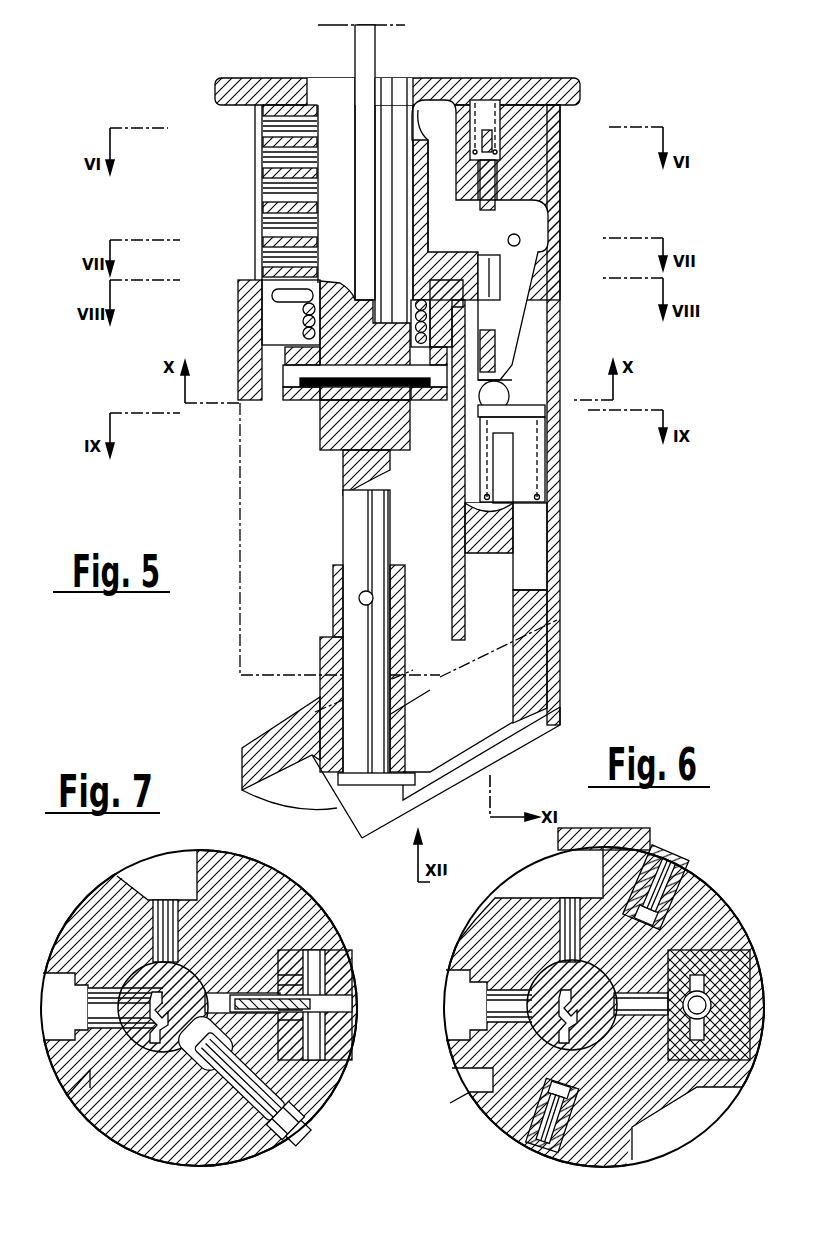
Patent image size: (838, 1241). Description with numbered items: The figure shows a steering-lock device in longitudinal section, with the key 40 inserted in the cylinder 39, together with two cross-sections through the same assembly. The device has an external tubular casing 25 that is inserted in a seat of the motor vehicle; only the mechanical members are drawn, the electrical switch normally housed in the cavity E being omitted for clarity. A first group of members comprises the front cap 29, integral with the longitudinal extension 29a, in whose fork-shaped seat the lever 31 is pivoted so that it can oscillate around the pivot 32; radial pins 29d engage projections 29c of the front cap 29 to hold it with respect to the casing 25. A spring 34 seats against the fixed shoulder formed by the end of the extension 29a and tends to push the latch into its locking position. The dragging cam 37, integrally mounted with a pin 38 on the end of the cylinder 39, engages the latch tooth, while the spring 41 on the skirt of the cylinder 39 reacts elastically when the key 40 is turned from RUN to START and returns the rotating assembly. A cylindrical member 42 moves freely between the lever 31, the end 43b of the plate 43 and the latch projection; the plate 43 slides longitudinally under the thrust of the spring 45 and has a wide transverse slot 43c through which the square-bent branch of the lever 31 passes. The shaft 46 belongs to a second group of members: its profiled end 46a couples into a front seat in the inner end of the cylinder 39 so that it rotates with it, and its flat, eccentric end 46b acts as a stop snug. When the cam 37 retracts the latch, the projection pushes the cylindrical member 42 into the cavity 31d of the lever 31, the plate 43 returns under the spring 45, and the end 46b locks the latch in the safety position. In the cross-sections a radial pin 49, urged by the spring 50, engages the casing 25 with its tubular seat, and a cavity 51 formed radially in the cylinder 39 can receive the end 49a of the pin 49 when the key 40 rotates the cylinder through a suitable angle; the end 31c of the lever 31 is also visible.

In FIG. 6, the external tubular casing 25 is at (500, 913).
In FIG. 7, the external tubular casing 25 is at (175, 1147).
In FIG. 5, the front cap 29 is at (238, 90).
In FIG. 5, the longitudinal extension 29a is at (552, 140).
In FIG. 6, the longitudinal extension 29a is at (713, 1050).
In FIG. 7, the longitudinal extension 29a is at (350, 978).
In FIG. 6, the projections 29c is at (660, 908).
In FIG. 6, the radial pins 29d is at (663, 880).
In FIG. 5, the lever 31 is at (530, 235).
In FIG. 7, the lever 31 is at (347, 1043).
In FIG. 5, the lever upper end 31c is at (420, 130).
In FIG. 5, the cavity of lever 31d is at (500, 385).
In FIG. 5, the pivot 32 is at (523, 238).
In FIG. 7, the pivot 32 is at (317, 962).
In FIG. 5, the spring 34 is at (540, 480).
In FIG. 5, the dragging cam 37 is at (300, 352).
In FIG. 5, the pin 38 is at (298, 405).
In FIG. 5, the cylinder 39 is at (333, 115).
In FIG. 6, the cylinder 39 is at (540, 982).
In FIG. 7, the cylinder 39 is at (192, 985).
In FIG. 5, the key 40 is at (368, 58).
In FIG. 5, the spring 41 is at (278, 310).
In FIG. 5, the cylindrical member 42 is at (525, 410).
In FIG. 5, the plate 43 is at (492, 185).
In FIG. 6, the plate 43 is at (697, 977).
In FIG. 7, the plate 43 is at (287, 977).
In FIG. 5, the end of plate 43b is at (498, 345).
In FIG. 5, the transverse slot 43c is at (495, 272).
In FIG. 5, the spring 45 is at (486, 95).
In FIG. 6, the spring 45 is at (712, 1012).
In FIG. 5, the shaft 46 is at (355, 548).
In FIG. 5, the profiled end of shaft 46a is at (352, 460).
In FIG. 5, the end of shaft 46b is at (362, 778).
In FIG. 7, the radial pin 49 is at (297, 1133).
In FIG. 7, the end of pin 49a is at (170, 1080).
In FIG. 7, the spring 50 is at (230, 1140).
In FIG. 7, the cavity 51 is at (110, 1108).
In FIG. 5, the cavity E is at (265, 518).